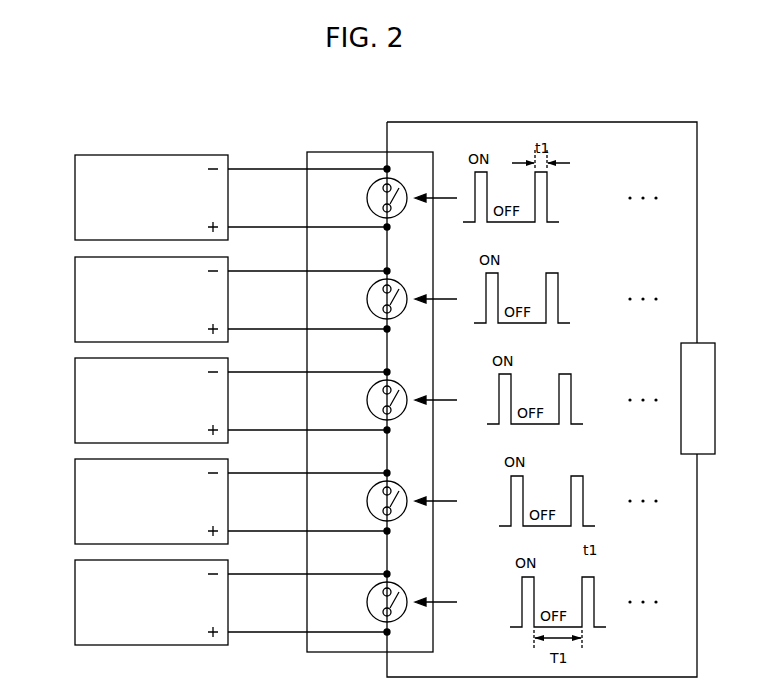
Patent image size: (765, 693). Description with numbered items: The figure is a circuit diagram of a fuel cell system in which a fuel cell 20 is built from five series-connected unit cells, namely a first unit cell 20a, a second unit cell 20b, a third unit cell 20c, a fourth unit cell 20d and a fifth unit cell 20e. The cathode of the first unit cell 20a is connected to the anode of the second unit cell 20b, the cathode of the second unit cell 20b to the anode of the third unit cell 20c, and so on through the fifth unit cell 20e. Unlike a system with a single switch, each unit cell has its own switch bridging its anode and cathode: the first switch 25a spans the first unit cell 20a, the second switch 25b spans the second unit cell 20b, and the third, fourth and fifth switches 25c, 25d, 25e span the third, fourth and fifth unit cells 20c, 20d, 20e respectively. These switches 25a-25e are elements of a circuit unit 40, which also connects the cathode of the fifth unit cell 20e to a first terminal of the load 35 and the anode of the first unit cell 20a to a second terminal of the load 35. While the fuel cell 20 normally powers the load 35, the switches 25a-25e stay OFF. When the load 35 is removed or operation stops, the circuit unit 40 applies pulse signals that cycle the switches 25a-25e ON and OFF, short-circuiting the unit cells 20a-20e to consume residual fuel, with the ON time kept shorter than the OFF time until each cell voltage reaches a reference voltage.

The fuel cell 20 is at (63, 157).
The first unit cell 20a is at (138, 613).
The second unit cell 20b is at (138, 512).
The third unit cell 20c is at (138, 411).
The fourth unit cell 20d is at (138, 310).
The fifth unit cell 20e is at (138, 208).
The first switch 25a is at (367, 602).
The second switch 25b is at (367, 501).
The third switch 25c is at (367, 400).
The fourth switch 25d is at (367, 299).
The fifth switch 25e is at (367, 198).
The load 35 is at (681, 418).
The circuit unit 40 is at (339, 152).